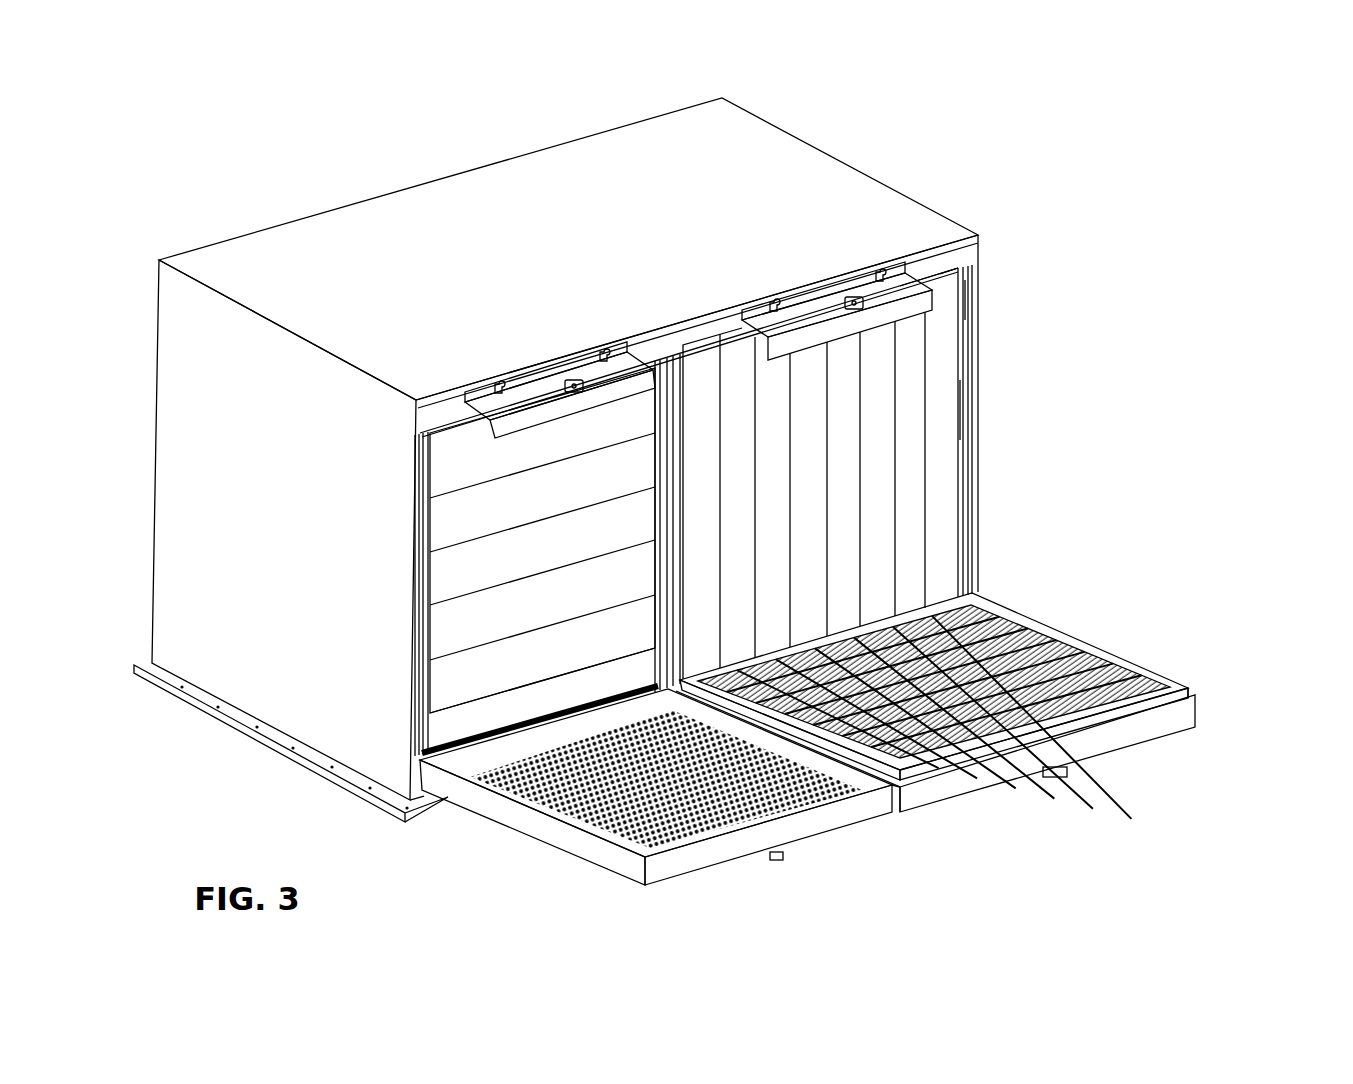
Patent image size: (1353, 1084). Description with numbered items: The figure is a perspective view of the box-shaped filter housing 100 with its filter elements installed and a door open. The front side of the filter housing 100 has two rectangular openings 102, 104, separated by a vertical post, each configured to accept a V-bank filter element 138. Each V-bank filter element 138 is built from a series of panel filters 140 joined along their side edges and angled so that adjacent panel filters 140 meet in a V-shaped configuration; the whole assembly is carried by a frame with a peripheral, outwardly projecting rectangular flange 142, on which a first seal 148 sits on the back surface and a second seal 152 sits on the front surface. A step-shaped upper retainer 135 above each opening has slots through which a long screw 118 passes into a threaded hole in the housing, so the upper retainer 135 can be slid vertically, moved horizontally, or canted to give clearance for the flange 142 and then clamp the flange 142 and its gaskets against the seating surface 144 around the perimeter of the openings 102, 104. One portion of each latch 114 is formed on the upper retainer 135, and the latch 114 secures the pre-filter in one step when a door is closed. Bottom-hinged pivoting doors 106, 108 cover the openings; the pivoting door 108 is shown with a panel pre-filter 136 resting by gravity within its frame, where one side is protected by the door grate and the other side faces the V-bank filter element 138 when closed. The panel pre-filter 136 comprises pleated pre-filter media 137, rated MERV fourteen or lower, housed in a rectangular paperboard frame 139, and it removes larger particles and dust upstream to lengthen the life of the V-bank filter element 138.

The filter housing 100 is at (1032, 128).
The rectangular opening 102 is at (475, 725).
The rectangular opening 104 is at (960, 562).
The pivoting door 106 is at (797, 833).
The pivoting door 108 is at (1113, 737).
The latch 114 is at (572, 380).
The screw 118 is at (605, 360).
The upper retainer 135 is at (513, 397).
The panel pre-filter 136 is at (1160, 670).
The pleated pre-filter media 137 is at (1080, 663).
The V-bank filter element 138 is at (452, 687).
The paperboard frame 139 is at (1187, 693).
The panel filter 140 is at (870, 490).
The flange 142 is at (968, 408).
The seating surface 144 is at (968, 272).
The first seal 148 is at (952, 266).
The second seal 152 is at (972, 295).